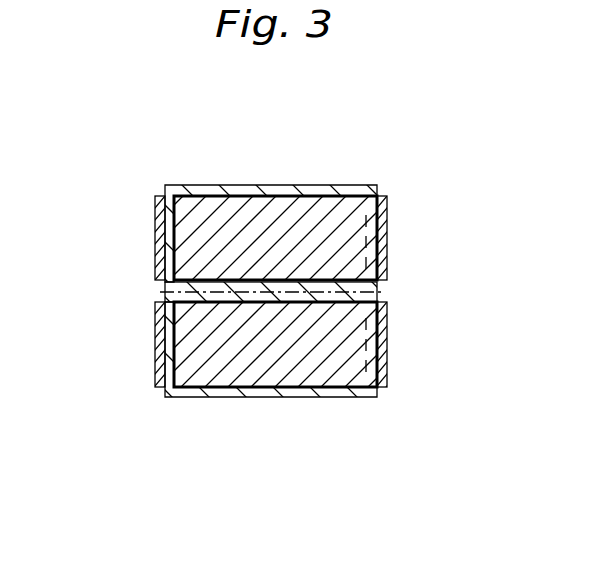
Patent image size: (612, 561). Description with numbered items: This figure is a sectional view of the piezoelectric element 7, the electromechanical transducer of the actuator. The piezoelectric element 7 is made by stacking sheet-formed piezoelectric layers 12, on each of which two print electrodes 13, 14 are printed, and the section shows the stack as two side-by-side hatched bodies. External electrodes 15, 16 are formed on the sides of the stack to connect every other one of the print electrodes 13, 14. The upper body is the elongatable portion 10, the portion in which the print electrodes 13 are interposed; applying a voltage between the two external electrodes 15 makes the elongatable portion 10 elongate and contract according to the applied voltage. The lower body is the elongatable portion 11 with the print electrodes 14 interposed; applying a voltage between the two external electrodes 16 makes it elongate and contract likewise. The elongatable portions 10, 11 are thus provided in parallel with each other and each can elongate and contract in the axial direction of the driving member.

The piezoelectric element 7 is at (166, 176).
The elongatable portion 10 is at (275, 182).
The elongatable portion 11 is at (258, 401).
The piezoelectric layer 12 is at (212, 189).
The print electrode 13 is at (314, 214).
The print electrode 14 is at (307, 372).
The external electrode 15 is at (155, 247).
The external electrode 16 is at (155, 354).